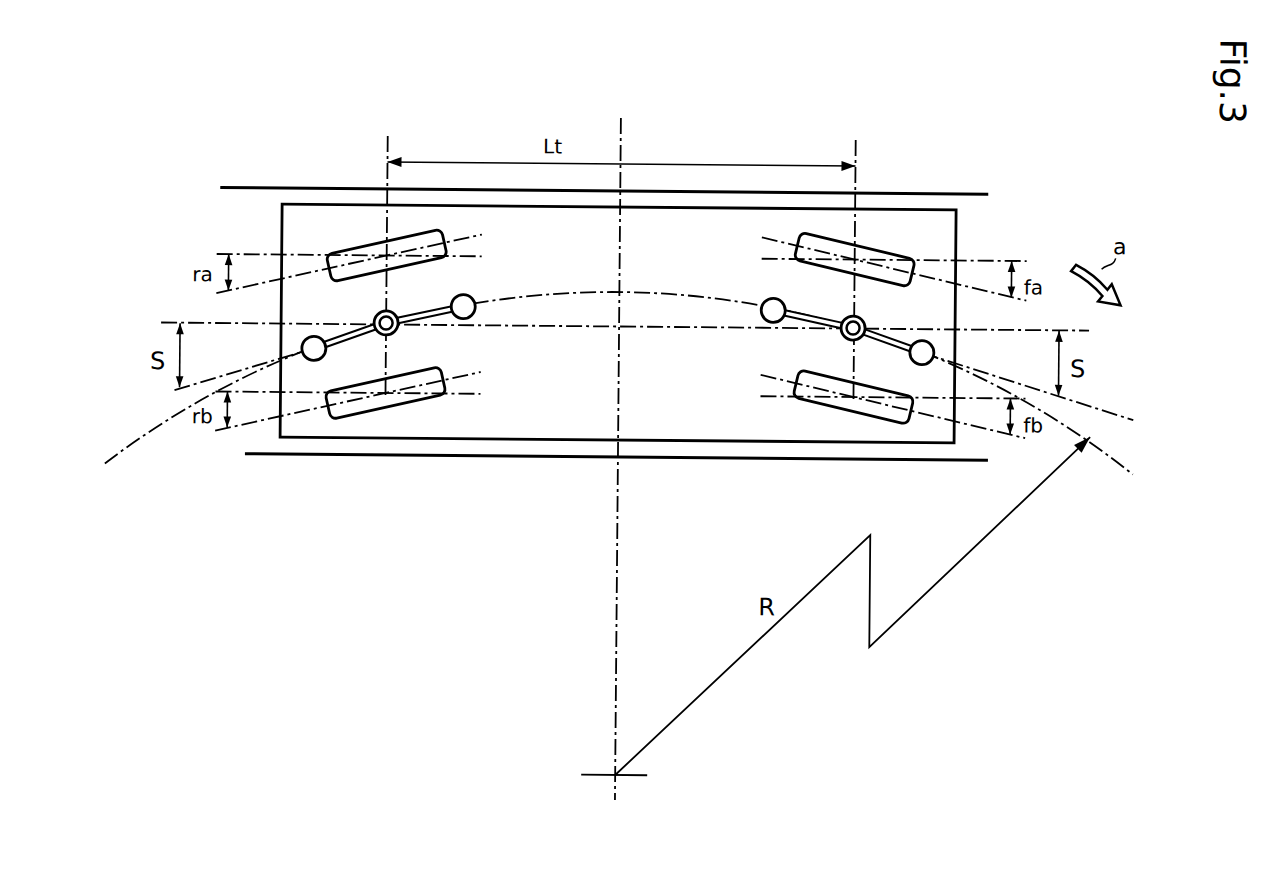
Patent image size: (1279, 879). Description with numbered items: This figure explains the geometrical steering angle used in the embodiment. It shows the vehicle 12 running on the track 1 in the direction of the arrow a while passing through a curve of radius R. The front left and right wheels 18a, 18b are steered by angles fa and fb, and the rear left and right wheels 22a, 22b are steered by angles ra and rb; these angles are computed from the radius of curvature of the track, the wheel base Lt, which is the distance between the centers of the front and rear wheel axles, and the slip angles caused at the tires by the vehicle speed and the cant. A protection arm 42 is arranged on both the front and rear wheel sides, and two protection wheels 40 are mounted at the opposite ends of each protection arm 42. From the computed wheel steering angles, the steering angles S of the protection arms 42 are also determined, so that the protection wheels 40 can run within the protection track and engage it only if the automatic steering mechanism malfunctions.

The track 1 is at (256, 191).
The vehicle 12 is at (888, 207).
The front left wheel 18a is at (873, 242).
The front right wheel 18b is at (796, 374).
The rear left wheel 22a is at (364, 247).
The rear right wheel 22b is at (434, 369).
The protection wheel 40 is at (301, 350).
The protection arm 42 is at (342, 332).